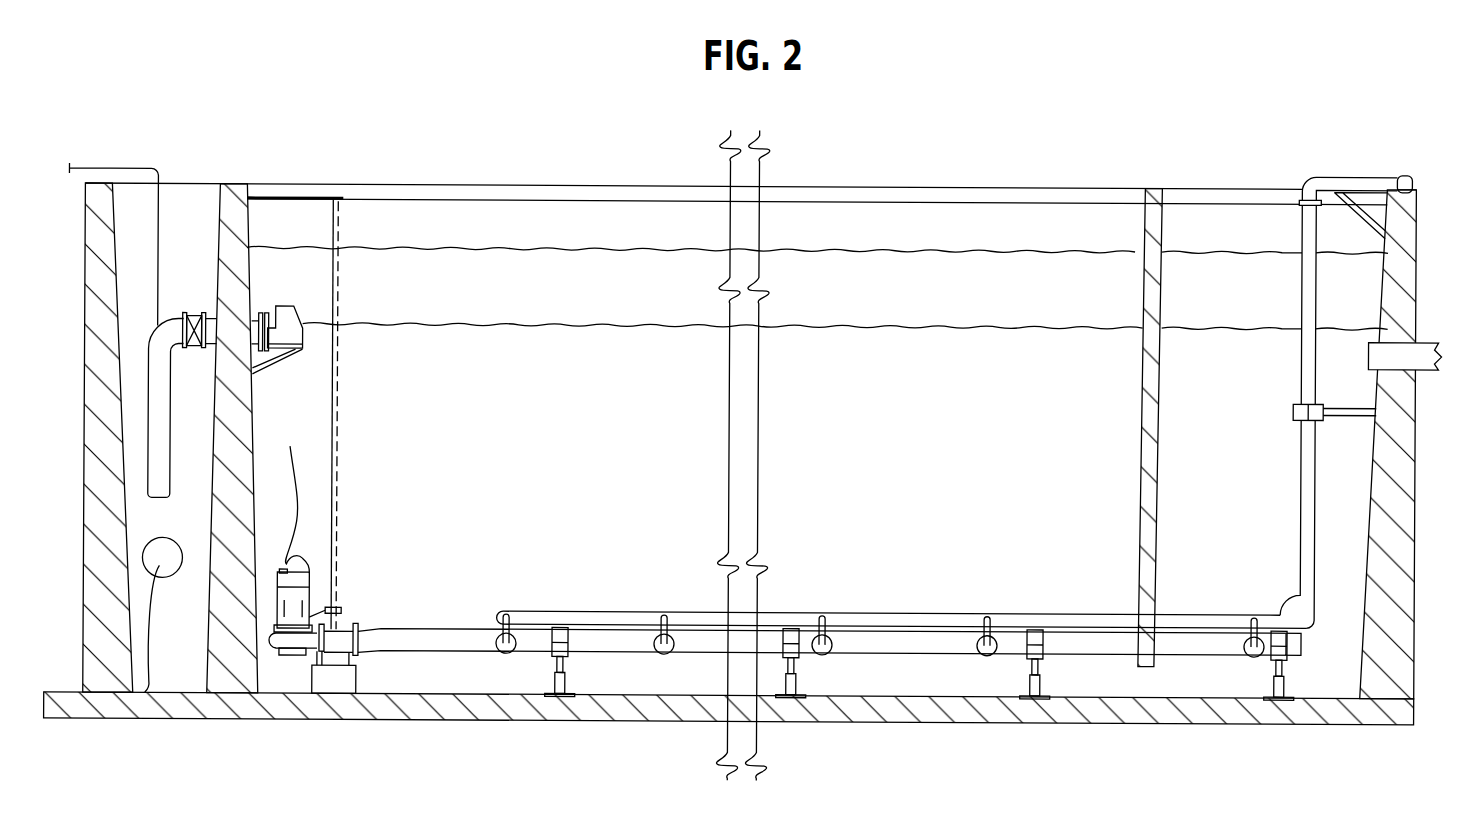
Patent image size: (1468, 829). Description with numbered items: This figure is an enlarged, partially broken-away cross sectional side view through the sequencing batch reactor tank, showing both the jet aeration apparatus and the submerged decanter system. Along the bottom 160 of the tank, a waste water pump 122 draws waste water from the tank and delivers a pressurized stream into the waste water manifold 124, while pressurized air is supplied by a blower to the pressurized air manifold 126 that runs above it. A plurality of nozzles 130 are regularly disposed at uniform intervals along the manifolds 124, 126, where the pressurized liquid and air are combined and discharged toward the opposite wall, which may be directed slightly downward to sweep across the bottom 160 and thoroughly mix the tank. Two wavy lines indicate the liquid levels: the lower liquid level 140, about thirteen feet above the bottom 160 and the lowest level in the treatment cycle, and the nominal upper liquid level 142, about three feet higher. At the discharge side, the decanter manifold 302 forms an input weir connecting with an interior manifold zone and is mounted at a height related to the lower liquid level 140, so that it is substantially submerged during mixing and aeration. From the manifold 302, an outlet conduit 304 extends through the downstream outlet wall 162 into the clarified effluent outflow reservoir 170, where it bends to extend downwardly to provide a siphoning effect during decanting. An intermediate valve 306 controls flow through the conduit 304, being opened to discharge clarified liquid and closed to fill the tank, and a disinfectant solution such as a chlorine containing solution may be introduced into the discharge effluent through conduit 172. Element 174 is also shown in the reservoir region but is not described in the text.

The waste water pump 122 is at (295, 612).
The waste water manifold 124 is at (413, 643).
The pressurized air manifold 126 is at (870, 621).
The nozzles 130 is at (513, 645).
The lower liquid level 140 is at (597, 323).
The upper liquid level 142 is at (660, 247).
The bottom 160 is at (460, 683).
The downstream outlet wall 162 is at (237, 183).
The clarified effluent outflow reservoir 170 is at (187, 631).
The conduit 172 is at (157, 217).
The drain line 174 is at (146, 692).
The decanter manifold 302 is at (290, 305).
The outlet conduit 304 is at (256, 312).
The intermediate valve 306 is at (193, 312).